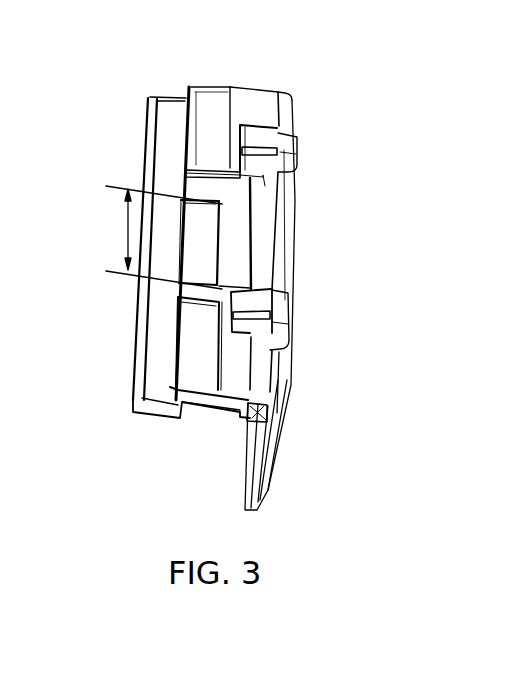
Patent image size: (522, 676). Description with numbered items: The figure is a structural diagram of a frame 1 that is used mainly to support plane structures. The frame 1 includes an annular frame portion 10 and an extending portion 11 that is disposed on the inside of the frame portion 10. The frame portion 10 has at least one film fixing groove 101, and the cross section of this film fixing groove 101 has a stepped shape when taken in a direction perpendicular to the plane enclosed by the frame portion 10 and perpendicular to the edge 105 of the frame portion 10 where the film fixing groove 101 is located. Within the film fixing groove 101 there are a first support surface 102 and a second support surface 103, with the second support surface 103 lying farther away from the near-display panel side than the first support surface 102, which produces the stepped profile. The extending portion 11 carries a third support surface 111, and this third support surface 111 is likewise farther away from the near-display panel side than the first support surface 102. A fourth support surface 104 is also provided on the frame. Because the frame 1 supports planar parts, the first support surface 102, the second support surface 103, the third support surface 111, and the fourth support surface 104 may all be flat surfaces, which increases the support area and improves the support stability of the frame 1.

The frame 1 is at (115, 29).
The frame portion 10 is at (263, 108).
The film fixing groove 101 is at (234, 216).
The first support surface 102 is at (235, 273).
The second support surface 103 is at (198, 251).
The fourth support surface 104 is at (208, 108).
The edge 105 is at (184, 102).
The extending portion 11 is at (152, 404).
The third support surface 111 is at (165, 126).